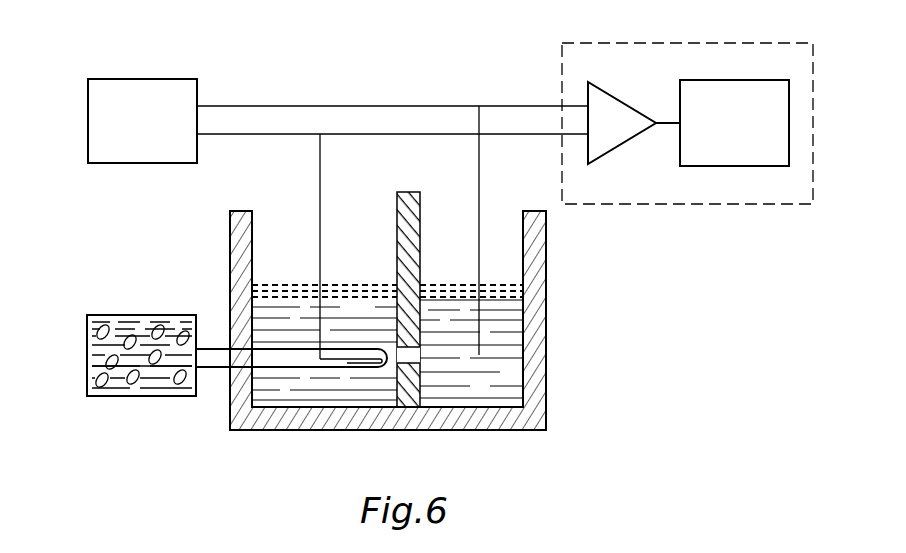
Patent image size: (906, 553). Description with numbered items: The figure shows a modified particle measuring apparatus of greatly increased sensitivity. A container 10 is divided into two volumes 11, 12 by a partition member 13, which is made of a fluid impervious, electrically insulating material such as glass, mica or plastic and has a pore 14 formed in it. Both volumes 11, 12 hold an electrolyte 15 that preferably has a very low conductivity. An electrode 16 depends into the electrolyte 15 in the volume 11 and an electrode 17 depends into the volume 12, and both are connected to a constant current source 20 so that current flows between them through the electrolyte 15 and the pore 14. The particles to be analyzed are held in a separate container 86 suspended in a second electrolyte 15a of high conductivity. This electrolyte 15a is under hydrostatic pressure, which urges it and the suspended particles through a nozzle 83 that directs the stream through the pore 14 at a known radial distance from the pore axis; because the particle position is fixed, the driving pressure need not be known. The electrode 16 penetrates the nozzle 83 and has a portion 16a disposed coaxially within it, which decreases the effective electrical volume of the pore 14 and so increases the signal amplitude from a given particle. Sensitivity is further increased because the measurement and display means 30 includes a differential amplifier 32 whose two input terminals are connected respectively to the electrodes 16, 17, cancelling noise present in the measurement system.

The container 10 is at (412, 337).
The volume 11 is at (327, 400).
The volume 12 is at (477, 388).
The partition member 13 is at (413, 207).
The pore 14 is at (421, 356).
The electrolyte 15 is at (324, 342).
The electrolyte 15a is at (160, 410).
The electrode 16 is at (320, 192).
The portion of electrode 16a is at (347, 360).
The electrode 17 is at (488, 248).
The constant current source 20 is at (168, 79).
The measurement and display means 30 is at (746, 43).
The differential amplifier 32 is at (634, 107).
The nozzle 83 is at (325, 368).
The container 86 is at (87, 368).